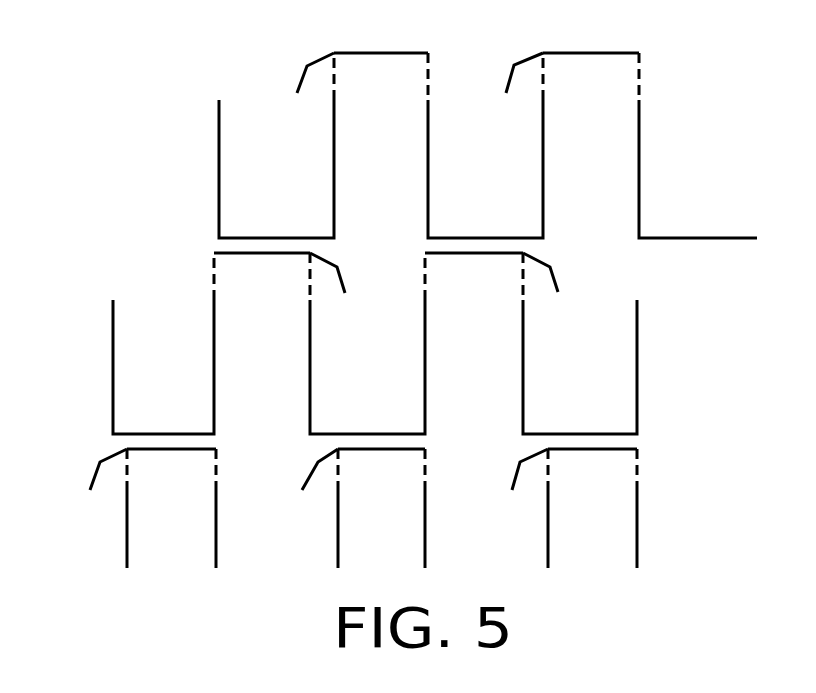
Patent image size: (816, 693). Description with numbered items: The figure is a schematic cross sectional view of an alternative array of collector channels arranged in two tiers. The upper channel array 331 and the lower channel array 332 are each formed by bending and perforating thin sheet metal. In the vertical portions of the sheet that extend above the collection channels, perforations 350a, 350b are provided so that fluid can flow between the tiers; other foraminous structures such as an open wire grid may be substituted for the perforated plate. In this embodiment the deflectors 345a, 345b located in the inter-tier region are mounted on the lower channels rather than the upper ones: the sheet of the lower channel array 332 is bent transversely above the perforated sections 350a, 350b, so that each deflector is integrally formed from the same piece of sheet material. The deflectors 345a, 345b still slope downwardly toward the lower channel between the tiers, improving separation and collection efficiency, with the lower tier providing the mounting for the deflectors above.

The channel array 331 is at (218, 210).
The channel array 332 is at (113, 410).
The deflector 345a is at (338, 273).
The deflector 345b is at (555, 272).
The perforations 350a is at (308, 265).
The perforations 350b is at (523, 265).